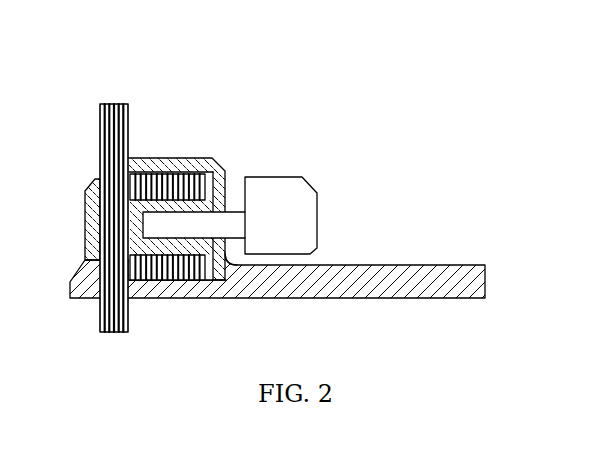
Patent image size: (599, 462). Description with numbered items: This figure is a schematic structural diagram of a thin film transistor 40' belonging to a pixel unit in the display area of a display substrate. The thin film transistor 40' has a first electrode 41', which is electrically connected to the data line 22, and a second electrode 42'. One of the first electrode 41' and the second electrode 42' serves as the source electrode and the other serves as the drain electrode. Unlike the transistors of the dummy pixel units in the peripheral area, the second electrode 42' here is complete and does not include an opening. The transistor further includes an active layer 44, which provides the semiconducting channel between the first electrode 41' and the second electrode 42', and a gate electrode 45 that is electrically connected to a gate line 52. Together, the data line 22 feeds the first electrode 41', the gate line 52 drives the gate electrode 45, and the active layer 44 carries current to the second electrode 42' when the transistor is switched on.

The thin film transistor 40' is at (289, 182).
The data line 22 is at (98, 117).
The active layer 44 is at (148, 170).
The first electrode 41' is at (181, 180).
The gate electrode 45 is at (220, 175).
The second electrode 42' is at (307, 187).
The gate line 52 is at (448, 298).